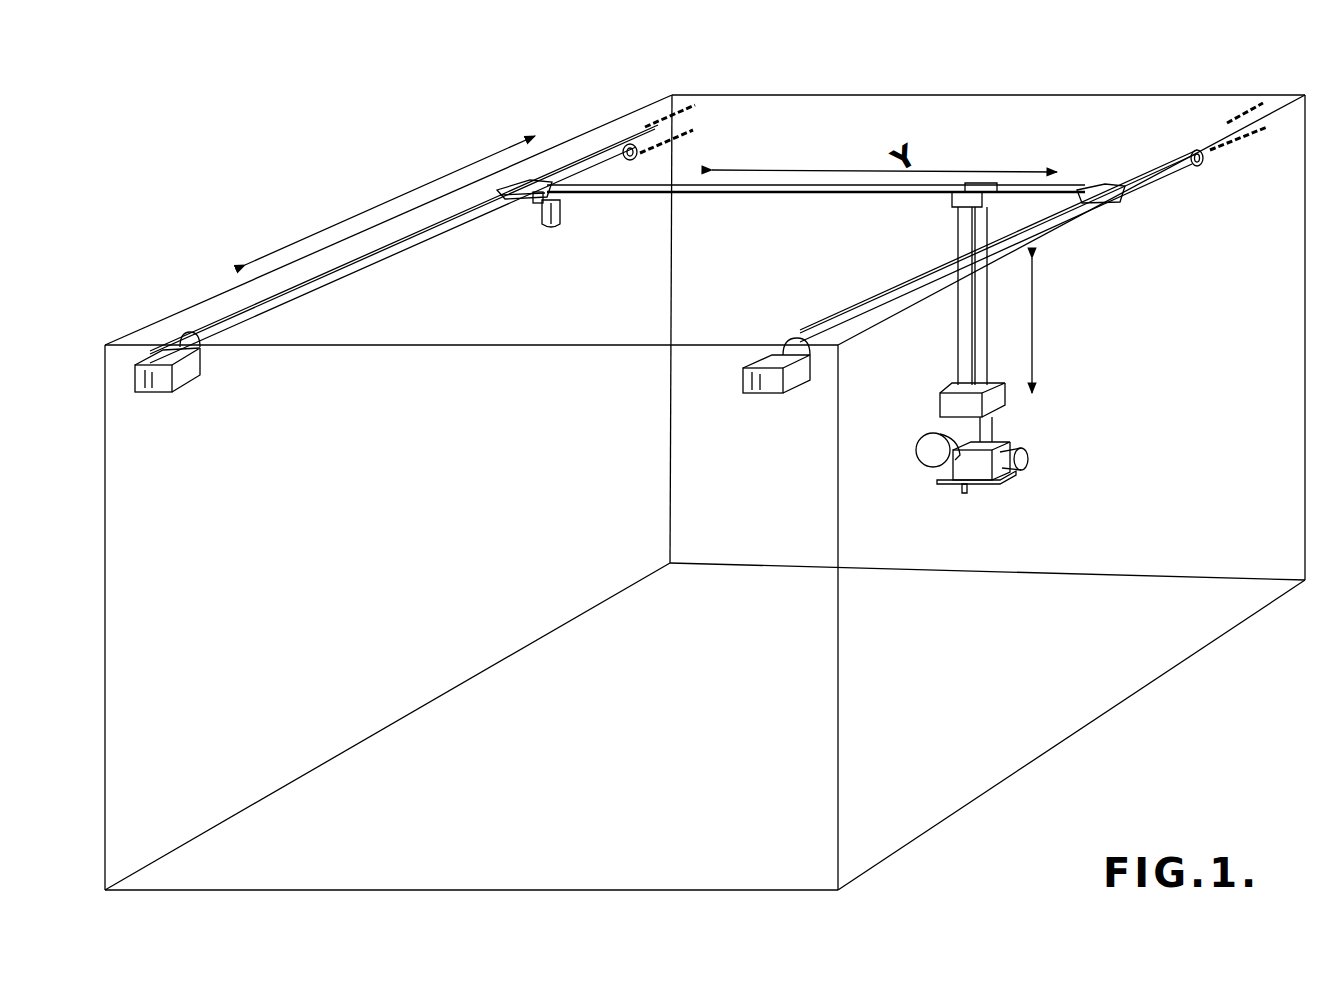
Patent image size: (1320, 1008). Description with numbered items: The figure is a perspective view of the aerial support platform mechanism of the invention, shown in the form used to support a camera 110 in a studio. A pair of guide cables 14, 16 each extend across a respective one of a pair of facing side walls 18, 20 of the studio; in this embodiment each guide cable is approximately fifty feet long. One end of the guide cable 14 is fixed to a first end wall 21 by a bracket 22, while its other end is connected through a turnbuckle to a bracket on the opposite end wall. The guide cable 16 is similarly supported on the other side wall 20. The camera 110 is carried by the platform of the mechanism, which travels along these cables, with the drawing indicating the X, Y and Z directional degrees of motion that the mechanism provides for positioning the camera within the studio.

The guide cable 14 is at (653, 124).
The guide cable 16 is at (1213, 123).
The side wall 18 is at (556, 536).
The side wall 20 is at (1210, 359).
The first end wall 21 is at (199, 504).
The bracket 22 is at (147, 352).
The camera 110 is at (912, 472).